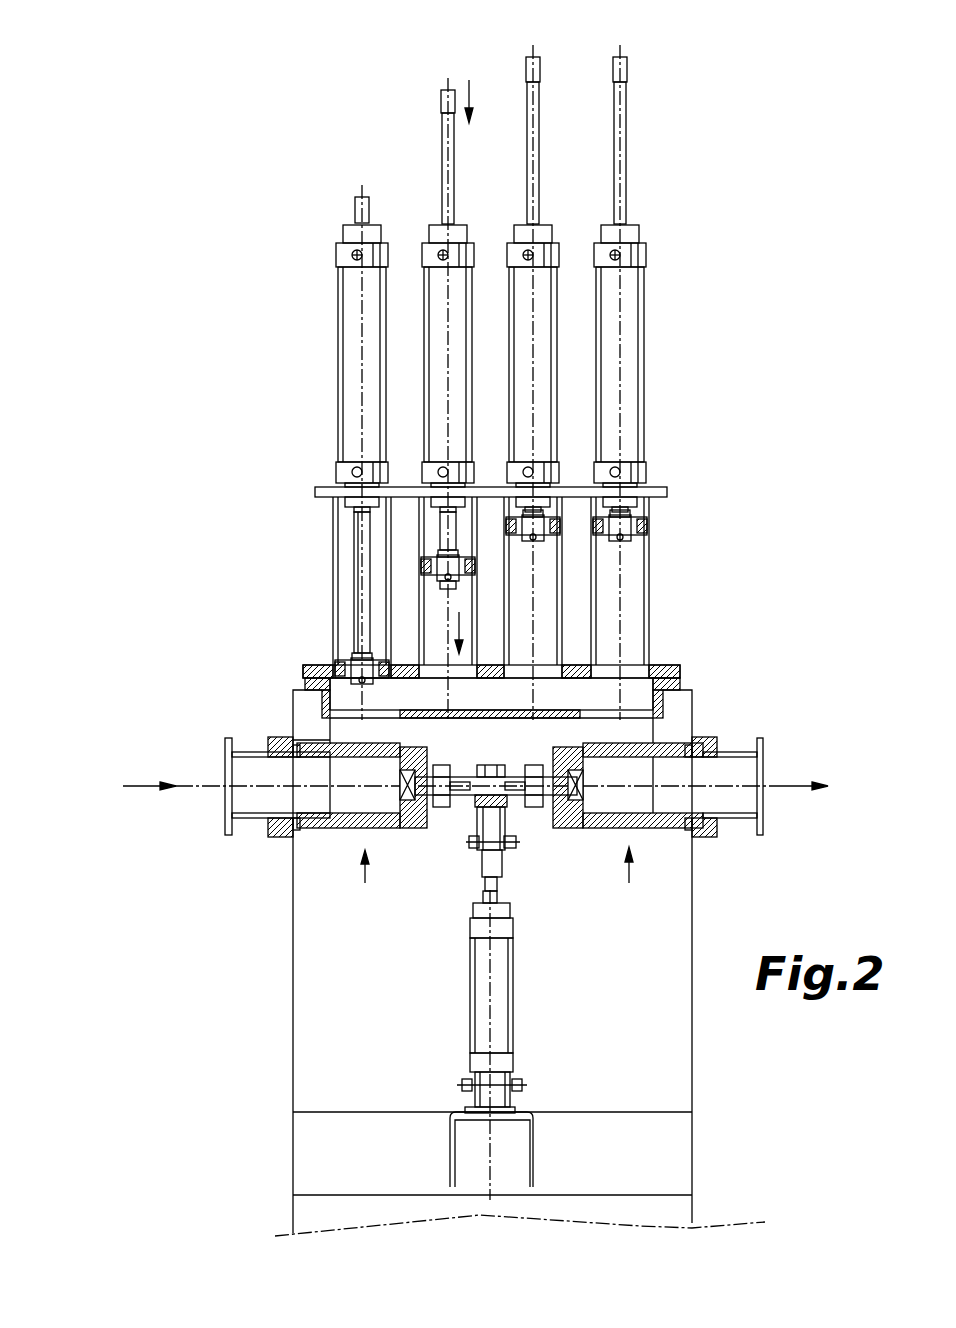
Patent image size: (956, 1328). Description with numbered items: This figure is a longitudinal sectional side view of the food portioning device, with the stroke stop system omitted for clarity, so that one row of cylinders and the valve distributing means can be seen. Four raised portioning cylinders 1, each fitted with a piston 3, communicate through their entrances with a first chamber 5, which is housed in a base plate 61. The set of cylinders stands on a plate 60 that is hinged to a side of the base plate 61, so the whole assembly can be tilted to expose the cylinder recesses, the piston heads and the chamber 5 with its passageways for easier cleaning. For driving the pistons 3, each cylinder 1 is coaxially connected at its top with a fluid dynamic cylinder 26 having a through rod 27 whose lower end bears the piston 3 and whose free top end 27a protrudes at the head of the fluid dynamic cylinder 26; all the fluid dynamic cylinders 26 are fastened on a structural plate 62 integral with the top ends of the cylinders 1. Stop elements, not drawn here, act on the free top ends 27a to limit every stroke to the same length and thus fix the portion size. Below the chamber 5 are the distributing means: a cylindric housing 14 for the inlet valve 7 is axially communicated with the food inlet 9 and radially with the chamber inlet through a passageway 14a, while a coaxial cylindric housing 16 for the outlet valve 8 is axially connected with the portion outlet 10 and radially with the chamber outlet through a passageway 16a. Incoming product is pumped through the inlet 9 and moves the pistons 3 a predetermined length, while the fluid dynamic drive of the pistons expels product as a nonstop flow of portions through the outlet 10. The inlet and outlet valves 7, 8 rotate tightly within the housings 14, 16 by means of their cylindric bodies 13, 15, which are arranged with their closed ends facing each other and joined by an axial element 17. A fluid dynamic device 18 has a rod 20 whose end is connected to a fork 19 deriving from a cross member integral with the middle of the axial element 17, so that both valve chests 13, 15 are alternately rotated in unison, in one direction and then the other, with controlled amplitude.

The cylinders of the first group 1 is at (335, 576).
The pistons 3 is at (346, 660).
The first chamber 5 is at (484, 703).
The inlet valve 7 is at (353, 884).
The outlet valve 8 is at (628, 883).
The inlet 9 is at (226, 775).
The outlet 10 is at (760, 775).
The cylindric body of the inlet valve 13 is at (380, 810).
The cylindric housing for the inlet valve 14 is at (345, 830).
The passageway 14a is at (340, 730).
The cylindric body of the outlet valve 15 is at (643, 805).
The cylindric housing for the outlet valve 16 is at (610, 830).
The passageway 16a is at (640, 728).
The axial element 17 is at (470, 772).
The fluid dynamic device 18 is at (513, 986).
The fork 19 is at (505, 825).
The rod 20 is at (482, 893).
The fluid dynamic cylinder 26 is at (343, 310).
The through rod 27 is at (444, 150).
The free top end 27a is at (355, 206).
The plate 60 is at (675, 670).
The base plate 61 is at (665, 690).
The structural plate 62 is at (660, 493).